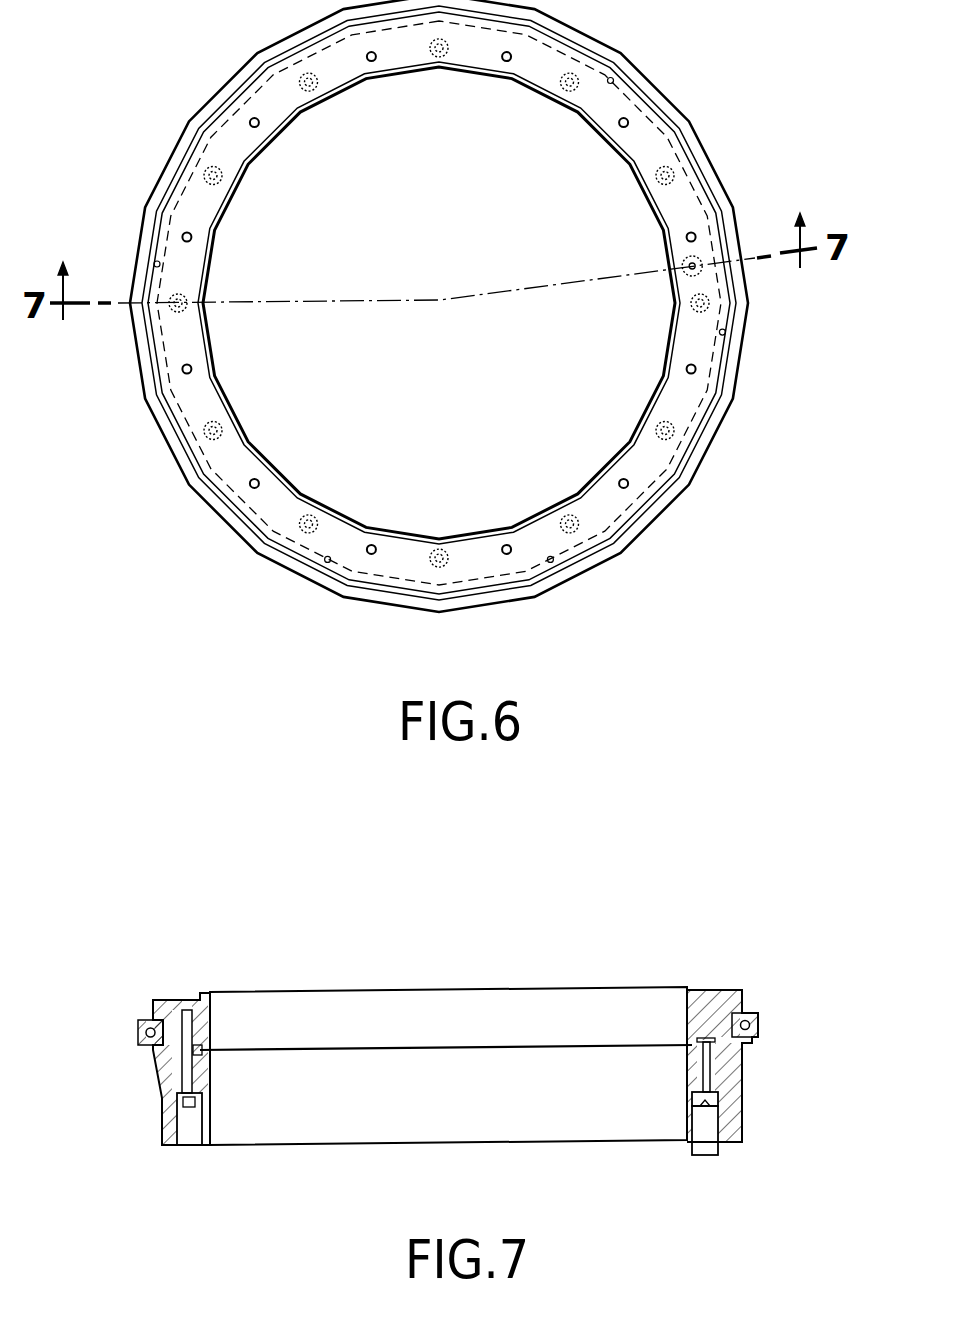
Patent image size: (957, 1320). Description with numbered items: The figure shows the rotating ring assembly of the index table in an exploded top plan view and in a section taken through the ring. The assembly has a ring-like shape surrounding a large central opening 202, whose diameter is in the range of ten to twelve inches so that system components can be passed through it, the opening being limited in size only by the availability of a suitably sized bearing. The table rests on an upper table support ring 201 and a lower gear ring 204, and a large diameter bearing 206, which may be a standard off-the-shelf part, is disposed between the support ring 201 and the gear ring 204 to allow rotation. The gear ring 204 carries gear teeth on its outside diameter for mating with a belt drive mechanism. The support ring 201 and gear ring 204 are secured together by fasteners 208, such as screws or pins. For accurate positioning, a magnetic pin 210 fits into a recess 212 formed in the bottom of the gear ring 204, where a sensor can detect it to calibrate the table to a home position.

In FIG. 6, the upper table support ring 201 is at (685, 182).
In FIG. 7, the upper table support ring 201 is at (725, 998).
In FIG. 6, the central opening 202 is at (634, 433).
In FIG. 7, the central opening 202 is at (688, 1002).
In FIG. 7, the lower gear ring 204 is at (732, 1063).
In FIG. 6, the bearing 206 is at (750, 368).
In FIG. 7, the bearing 206 is at (760, 1012).
In FIG. 7, the fasteners 208 is at (188, 1085).
In FIG. 7, the magnetic pin 210 is at (703, 1147).
In FIG. 7, the recess 212 is at (710, 1095).